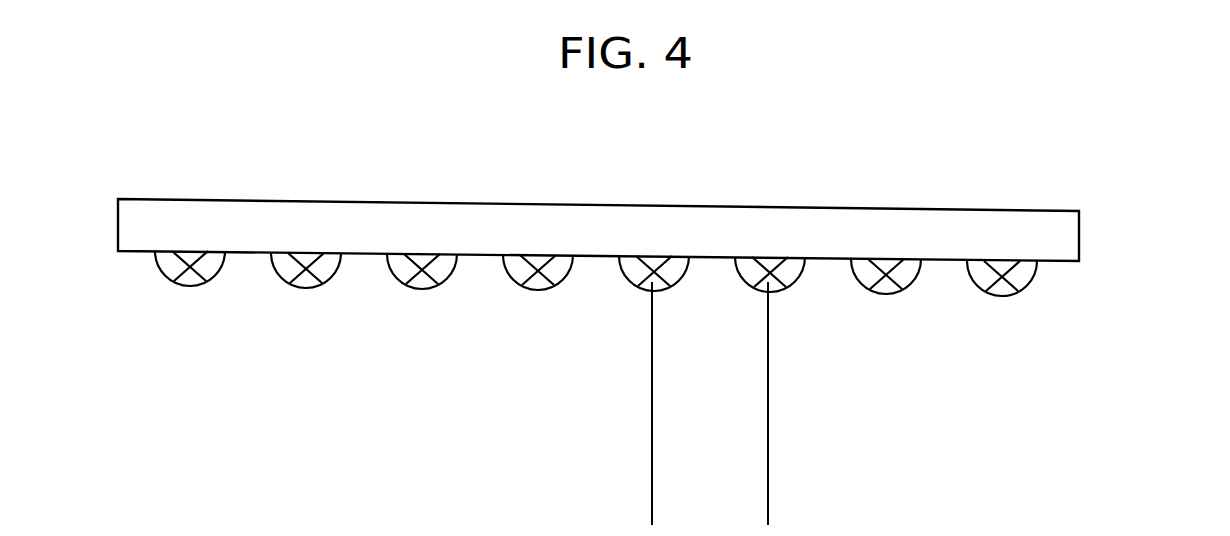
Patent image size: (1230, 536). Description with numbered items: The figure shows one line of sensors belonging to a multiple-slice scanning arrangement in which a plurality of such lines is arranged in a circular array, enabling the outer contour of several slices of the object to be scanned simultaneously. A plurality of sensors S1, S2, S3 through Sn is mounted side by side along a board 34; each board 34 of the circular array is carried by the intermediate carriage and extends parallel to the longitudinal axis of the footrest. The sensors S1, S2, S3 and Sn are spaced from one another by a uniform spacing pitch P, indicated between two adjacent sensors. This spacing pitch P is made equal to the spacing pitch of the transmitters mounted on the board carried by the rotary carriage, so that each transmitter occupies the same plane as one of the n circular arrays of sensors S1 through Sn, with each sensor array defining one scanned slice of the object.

The board 34 is at (1068, 238).
The first sensor S1 is at (185, 287).
The second sensor S2 is at (301, 289).
The third sensor S3 is at (417, 290).
The n-th sensor Sn is at (1000, 295).
The spacing pitch of the sensors P is at (814, 502).